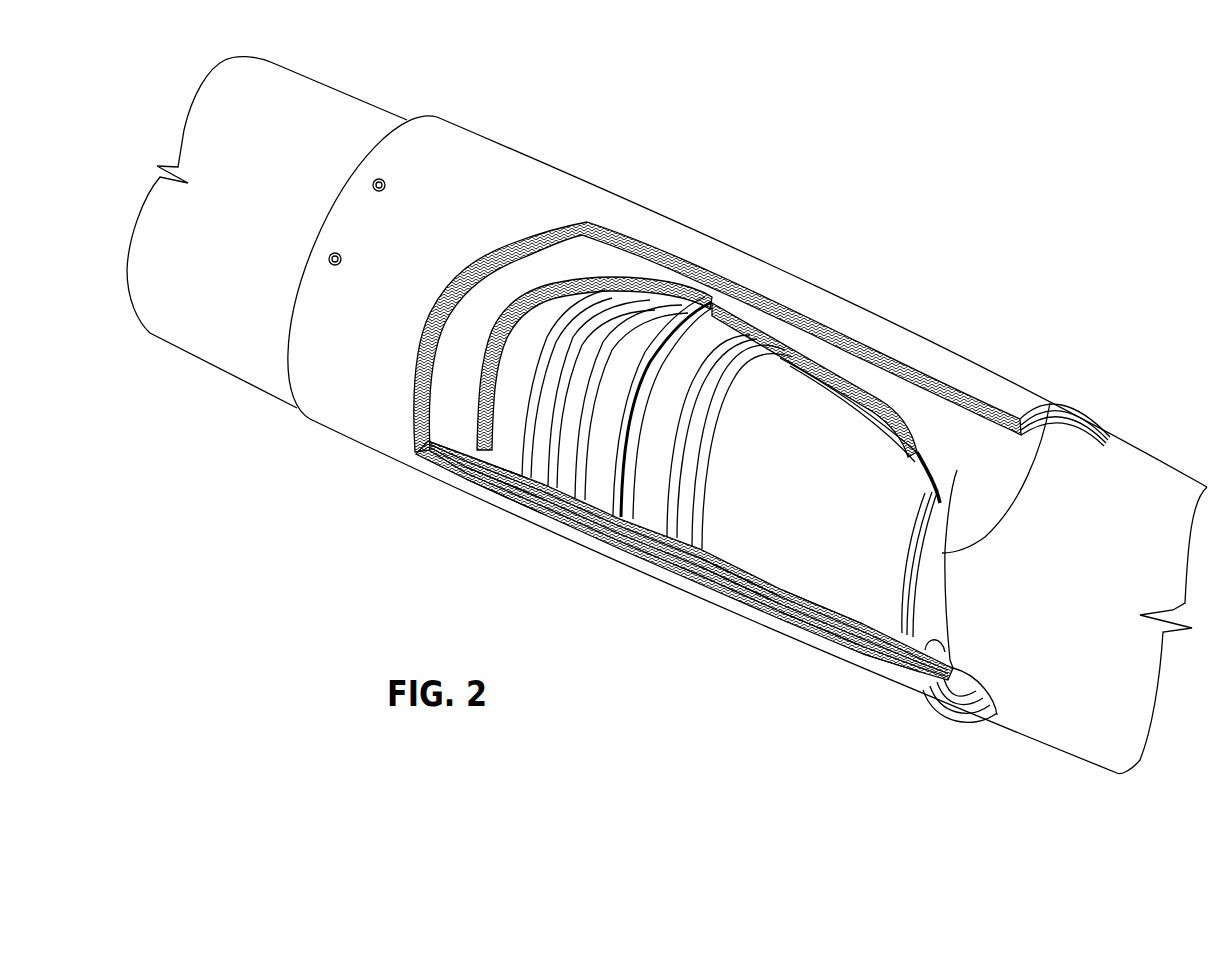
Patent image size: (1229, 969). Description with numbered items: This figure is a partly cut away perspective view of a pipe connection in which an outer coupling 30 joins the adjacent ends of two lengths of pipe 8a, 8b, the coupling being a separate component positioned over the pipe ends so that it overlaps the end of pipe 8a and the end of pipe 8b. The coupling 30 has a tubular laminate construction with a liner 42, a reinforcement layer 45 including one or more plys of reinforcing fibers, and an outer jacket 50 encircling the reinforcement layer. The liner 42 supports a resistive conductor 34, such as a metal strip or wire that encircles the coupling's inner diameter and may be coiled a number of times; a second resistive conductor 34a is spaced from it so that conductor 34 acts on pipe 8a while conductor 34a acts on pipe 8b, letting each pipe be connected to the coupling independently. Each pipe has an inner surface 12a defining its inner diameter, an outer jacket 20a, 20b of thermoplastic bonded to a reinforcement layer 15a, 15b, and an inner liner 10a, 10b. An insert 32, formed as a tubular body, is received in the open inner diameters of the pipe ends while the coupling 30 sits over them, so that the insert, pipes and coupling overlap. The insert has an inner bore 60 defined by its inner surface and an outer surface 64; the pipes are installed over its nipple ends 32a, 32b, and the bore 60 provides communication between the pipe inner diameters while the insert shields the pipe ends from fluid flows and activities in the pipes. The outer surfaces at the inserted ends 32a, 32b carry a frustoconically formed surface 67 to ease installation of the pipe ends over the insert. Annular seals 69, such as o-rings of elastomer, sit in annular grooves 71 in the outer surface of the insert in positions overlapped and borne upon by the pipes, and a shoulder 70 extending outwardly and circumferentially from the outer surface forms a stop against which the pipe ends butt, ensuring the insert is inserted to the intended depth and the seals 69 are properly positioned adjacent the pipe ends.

The pipe 8a is at (1040, 724).
The pipe 8b is at (333, 125).
The outer coupling 30 is at (478, 184).
The nipple end 32b is at (563, 322).
The outer jacket 20b is at (642, 268).
The insert 32 is at (790, 364).
The outer surface 64 is at (832, 420).
The frustoconically formed surface 67 is at (938, 502).
The nipple end 32a is at (957, 470).
The inner bore 60 is at (1066, 404).
The reinforcement layer 15b is at (452, 468).
The resistive conductor 34a is at (490, 480).
The inner liner 10b is at (517, 495).
The annular groove 71 is at (537, 520).
The annular seal 69 is at (553, 517).
The shoulder 70 is at (618, 532).
The resistive conductor 34 is at (690, 545).
The outer jacket 50 is at (757, 612).
The reinforcement layer 45 is at (800, 634).
The liner 42 is at (835, 650).
The inner liner 10a is at (872, 672).
The reinforcement layer 15a is at (900, 676).
The inner surface 12a is at (933, 662).
The outer jacket 20a is at (978, 690).